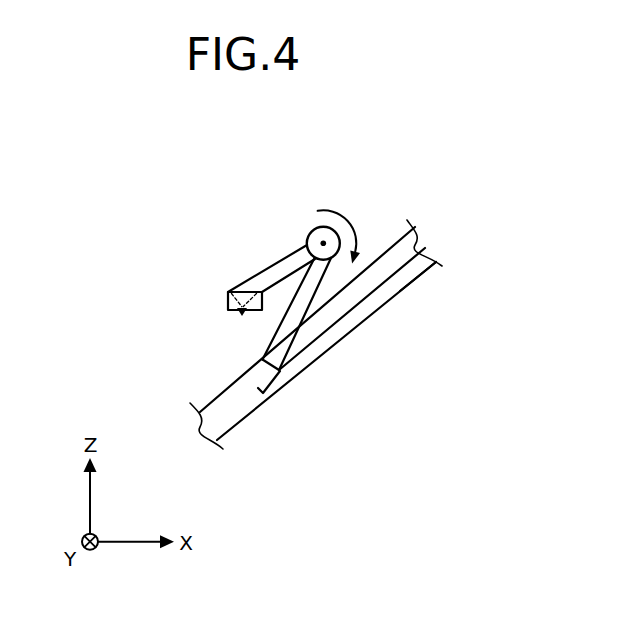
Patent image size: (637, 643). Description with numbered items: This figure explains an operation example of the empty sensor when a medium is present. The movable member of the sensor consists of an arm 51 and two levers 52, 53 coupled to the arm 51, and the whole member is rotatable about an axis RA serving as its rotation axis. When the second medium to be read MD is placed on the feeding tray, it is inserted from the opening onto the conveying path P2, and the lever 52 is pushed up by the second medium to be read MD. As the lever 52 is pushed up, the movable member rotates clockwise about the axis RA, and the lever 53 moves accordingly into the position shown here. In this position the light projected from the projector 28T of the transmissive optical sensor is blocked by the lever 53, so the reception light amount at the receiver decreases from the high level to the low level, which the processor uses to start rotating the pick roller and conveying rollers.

The arm 51 is at (312, 231).
The lever 52 is at (273, 332).
The lever 53 is at (275, 265).
The projector 28T is at (228, 301).
The axis RA is at (324, 242).
The second medium to be read MD is at (406, 272).
The conveying path P2 is at (242, 396).